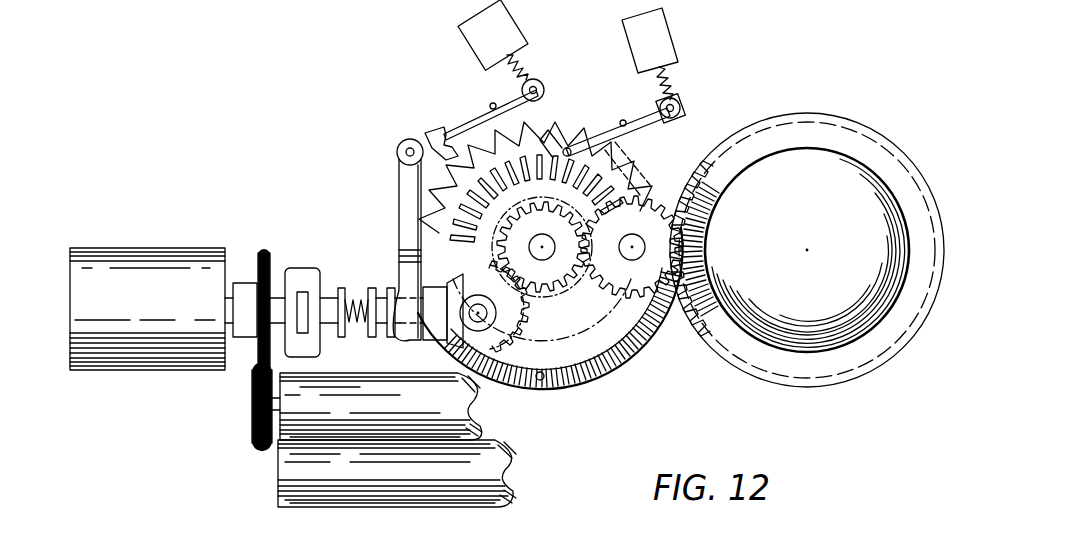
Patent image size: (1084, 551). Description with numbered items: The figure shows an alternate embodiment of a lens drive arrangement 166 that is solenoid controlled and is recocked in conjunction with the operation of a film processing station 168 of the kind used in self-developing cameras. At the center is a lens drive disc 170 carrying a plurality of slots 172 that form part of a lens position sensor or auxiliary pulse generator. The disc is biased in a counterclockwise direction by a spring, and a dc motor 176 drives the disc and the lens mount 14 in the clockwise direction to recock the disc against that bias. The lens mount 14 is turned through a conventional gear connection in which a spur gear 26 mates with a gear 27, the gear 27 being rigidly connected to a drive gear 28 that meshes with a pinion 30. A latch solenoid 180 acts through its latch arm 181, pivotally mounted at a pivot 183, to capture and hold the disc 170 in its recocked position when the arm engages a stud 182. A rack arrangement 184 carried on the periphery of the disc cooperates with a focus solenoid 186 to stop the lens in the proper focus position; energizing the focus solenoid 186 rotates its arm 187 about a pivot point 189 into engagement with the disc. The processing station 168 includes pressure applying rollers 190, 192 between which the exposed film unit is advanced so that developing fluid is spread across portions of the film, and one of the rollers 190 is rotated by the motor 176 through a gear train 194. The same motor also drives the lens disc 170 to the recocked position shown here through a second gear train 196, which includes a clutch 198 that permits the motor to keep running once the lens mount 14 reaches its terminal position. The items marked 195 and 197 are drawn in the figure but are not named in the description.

The lens mount 14 is at (706, 343).
The spur gear 26 is at (648, 196).
The gear 27 is at (557, 282).
The drive gear 28 is at (388, 0).
The pinion 30 is at (299, 5).
The lens drive arrangement 166 is at (688, 83).
The film processing station 168 is at (518, 482).
The lens drive disc 170 is at (525, 130).
The slots 172 is at (463, 212).
The dc motor 176 is at (152, 252).
The latch solenoid 180 is at (662, 32).
The latch arm 181 is at (655, 120).
The stud 182 is at (612, 120).
The pivot 183 is at (624, 120).
The rack arrangement 184 is at (470, 160).
The focus solenoid 186 is at (505, 30).
The arm 187 is at (430, 128).
The pivot point 189 is at (492, 104).
The roller 190 is at (381, 406).
The roller 192 is at (397, 473).
The gear train 194 is at (253, 400).
The pin 195 is at (537, 380).
The second gear train 196 is at (603, 378).
The arm 197 is at (402, 200).
The clutch 198 is at (300, 268).